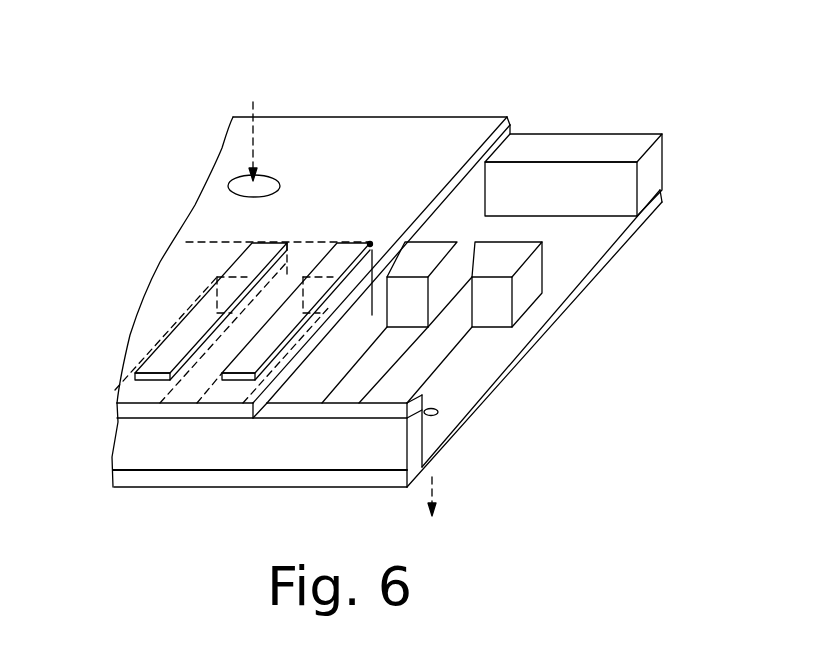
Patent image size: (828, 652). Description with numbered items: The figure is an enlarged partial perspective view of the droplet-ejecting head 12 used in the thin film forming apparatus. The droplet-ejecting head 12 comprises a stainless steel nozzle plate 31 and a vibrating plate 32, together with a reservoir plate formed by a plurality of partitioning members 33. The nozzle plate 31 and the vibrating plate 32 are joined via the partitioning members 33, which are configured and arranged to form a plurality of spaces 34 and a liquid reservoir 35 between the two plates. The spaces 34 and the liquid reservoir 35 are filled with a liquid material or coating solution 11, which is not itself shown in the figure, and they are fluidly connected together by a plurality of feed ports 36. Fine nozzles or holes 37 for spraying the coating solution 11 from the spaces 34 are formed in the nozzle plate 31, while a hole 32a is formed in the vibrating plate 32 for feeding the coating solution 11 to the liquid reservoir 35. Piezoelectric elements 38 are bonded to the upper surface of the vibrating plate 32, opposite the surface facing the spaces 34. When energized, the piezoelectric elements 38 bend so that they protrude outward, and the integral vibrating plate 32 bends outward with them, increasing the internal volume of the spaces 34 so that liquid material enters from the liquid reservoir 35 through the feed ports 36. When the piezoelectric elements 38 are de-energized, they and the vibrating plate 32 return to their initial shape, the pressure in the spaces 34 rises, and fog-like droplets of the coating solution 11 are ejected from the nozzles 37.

The coating solution 11 is at (250, 133).
The droplet-ejecting head 12 is at (457, 98).
The nozzle plate 31 is at (585, 277).
The vibrating plate 32 is at (267, 405).
The hole 32a is at (243, 187).
The partitioning members 33 is at (440, 348).
The spaces 34 is at (372, 250).
The liquid reservoir 35 is at (578, 222).
The feed ports 36 is at (450, 263).
The nozzles 37 is at (437, 409).
The piezoelectric elements 38 is at (178, 348).